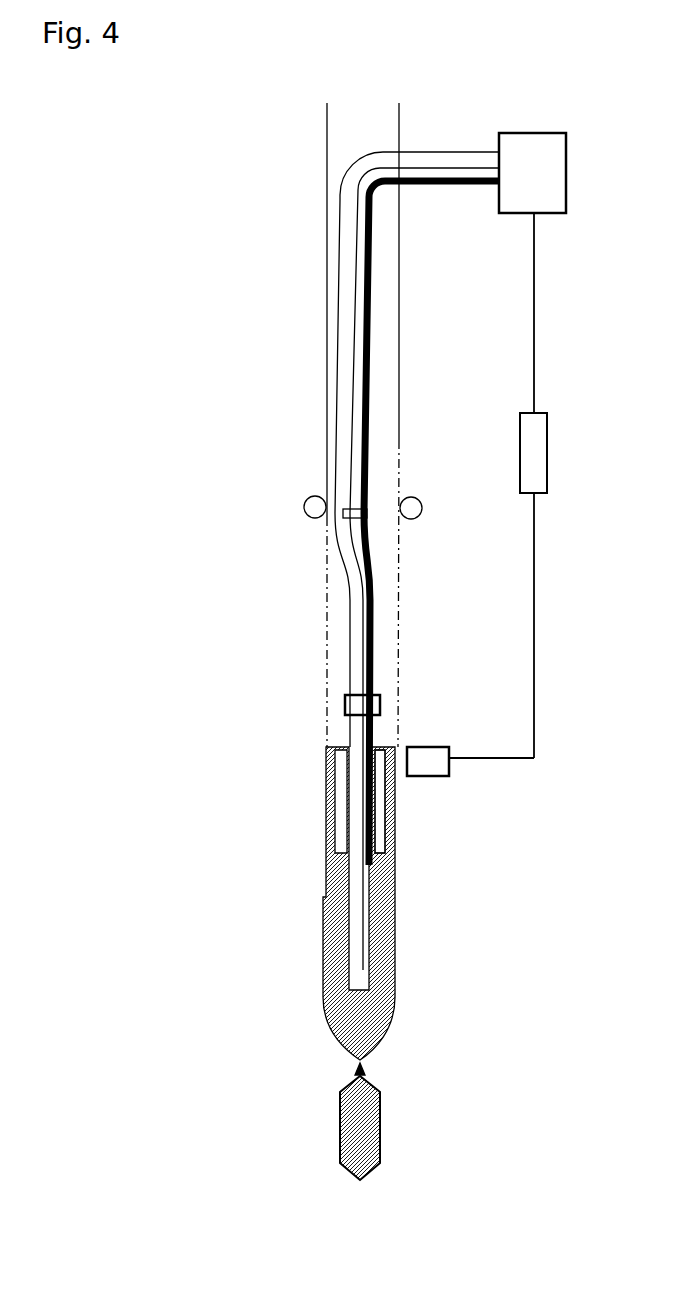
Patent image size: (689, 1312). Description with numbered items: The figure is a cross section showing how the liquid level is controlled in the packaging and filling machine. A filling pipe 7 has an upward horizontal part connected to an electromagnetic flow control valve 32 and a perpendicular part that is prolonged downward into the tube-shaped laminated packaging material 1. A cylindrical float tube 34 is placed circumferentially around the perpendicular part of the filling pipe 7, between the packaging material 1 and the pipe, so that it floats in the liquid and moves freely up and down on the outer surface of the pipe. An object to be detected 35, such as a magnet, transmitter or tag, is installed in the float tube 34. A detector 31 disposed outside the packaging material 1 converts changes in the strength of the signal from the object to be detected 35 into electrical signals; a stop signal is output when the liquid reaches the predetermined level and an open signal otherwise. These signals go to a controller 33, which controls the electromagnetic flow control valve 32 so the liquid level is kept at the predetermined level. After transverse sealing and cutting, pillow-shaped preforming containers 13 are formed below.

The tube-shaped packaging material 1 is at (327, 345).
The filling pipe 7 is at (450, 152).
The pillow-shaped preforming container 13 is at (390, 1128).
The detector 31 is at (428, 763).
The electromagnetic flow control valve 32 is at (518, 187).
The controller 33 is at (520, 452).
The float tube 34 is at (390, 812).
The object to be detected 35 is at (386, 745).